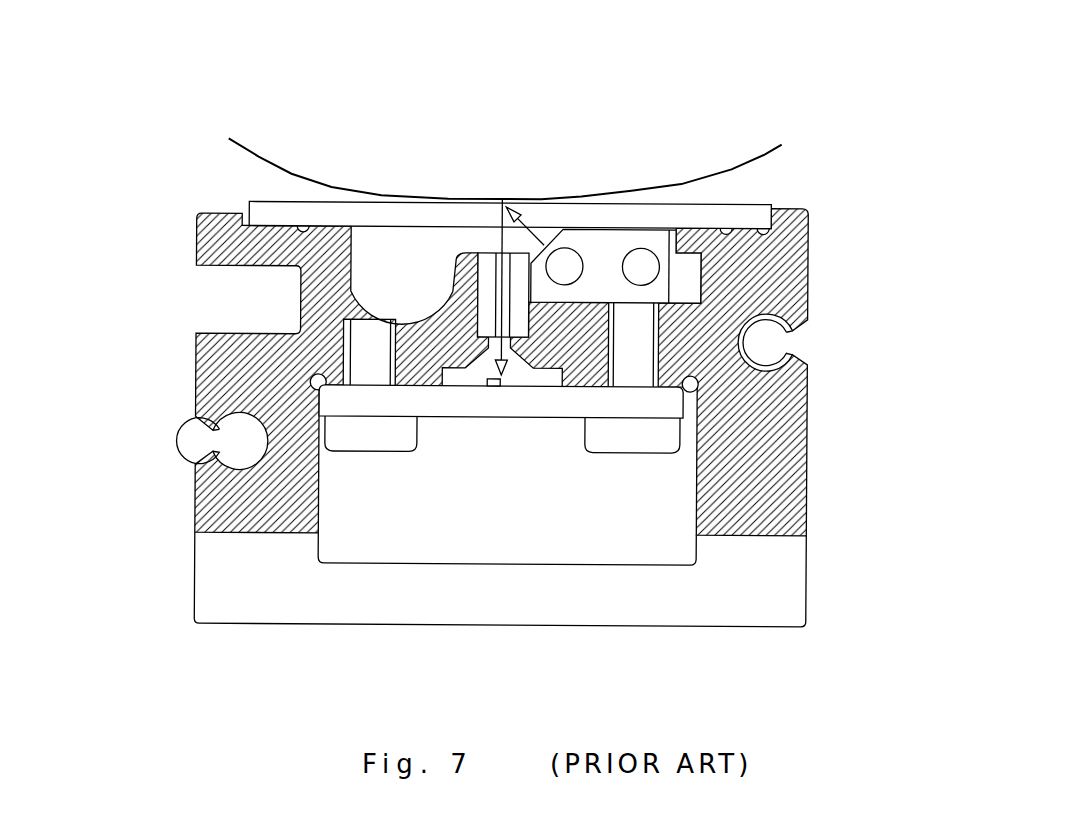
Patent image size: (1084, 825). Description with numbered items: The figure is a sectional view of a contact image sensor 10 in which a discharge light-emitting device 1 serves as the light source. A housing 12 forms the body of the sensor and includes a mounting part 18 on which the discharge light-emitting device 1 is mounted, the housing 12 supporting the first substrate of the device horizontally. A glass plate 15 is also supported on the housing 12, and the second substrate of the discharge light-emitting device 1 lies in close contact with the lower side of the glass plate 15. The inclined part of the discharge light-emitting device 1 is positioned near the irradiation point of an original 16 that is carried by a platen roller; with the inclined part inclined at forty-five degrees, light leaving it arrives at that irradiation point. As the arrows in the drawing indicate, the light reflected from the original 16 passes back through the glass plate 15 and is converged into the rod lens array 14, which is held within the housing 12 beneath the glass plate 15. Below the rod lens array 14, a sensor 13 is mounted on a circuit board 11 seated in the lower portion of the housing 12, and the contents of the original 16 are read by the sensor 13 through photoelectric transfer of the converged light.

The discharge light-emitting device 1 is at (613, 247).
The contact image sensor 10 is at (488, 374).
The circuit board 11 is at (566, 402).
The housing 12 is at (223, 382).
The sensor 13 is at (496, 386).
The rod lens array 14 is at (487, 277).
The glass plate 15 is at (272, 212).
The original 16 is at (677, 187).
The mounting part 18 is at (683, 300).